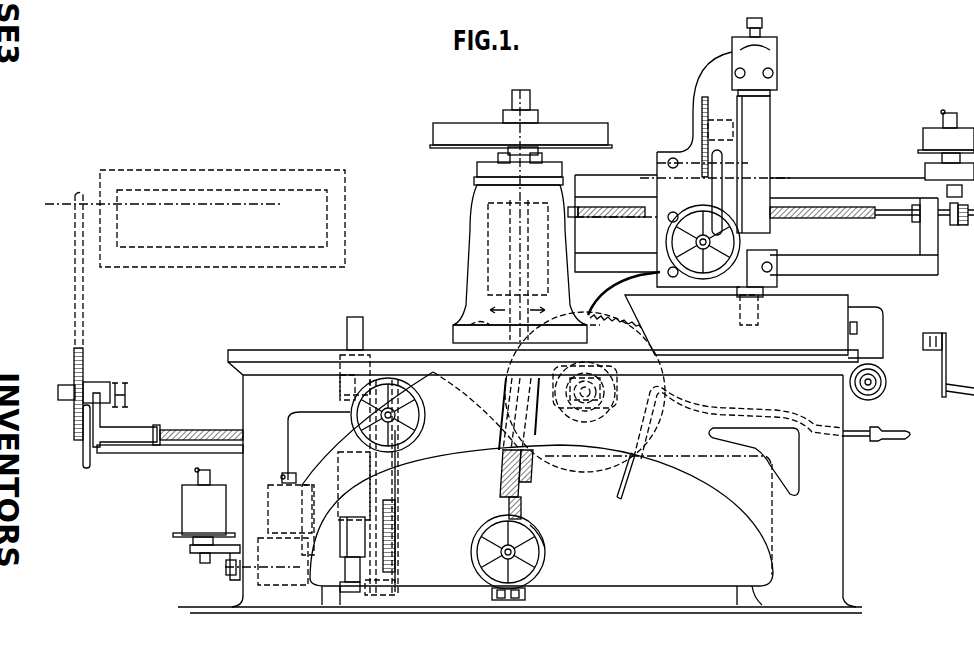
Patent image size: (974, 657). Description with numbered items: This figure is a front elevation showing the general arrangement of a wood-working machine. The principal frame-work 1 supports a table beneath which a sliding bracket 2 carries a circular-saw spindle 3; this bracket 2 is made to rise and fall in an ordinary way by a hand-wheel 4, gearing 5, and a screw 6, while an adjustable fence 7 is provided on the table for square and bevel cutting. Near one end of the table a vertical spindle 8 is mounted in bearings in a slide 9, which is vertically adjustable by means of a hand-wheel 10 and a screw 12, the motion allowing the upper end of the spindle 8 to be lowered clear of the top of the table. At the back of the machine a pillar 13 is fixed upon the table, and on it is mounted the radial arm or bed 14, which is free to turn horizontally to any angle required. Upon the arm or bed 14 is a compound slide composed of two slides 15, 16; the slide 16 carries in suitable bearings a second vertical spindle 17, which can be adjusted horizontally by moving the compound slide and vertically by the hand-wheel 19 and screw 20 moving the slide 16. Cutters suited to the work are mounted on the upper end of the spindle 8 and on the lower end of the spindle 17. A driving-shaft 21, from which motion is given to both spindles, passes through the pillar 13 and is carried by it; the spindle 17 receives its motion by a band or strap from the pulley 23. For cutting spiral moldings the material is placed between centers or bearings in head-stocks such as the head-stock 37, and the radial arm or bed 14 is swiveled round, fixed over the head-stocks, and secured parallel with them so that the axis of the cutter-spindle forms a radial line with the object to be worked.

The principal frame-work 1 is at (544, 481).
The sliding bracket 2 is at (532, 452).
The circular-saw spindle 3 is at (585, 392).
The hand-wheel 4 is at (512, 557).
The gearing 5 is at (545, 546).
The screw 6 is at (520, 505).
The adjustable fence 7 is at (735, 315).
The vertical spindle 8 is at (355, 358).
The slide 9 is at (352, 554).
The hand-wheel 10 is at (397, 415).
The screw 12 is at (395, 537).
The pillar 13 is at (535, 329).
The radial arm or bed 14 is at (713, 217).
The slide 15 is at (614, 223).
The slide 16 is at (715, 152).
The vertical spindle 17 is at (761, 292).
The hand-wheel 19 is at (703, 245).
The screw 20 is at (712, 146).
The driving-shaft 21 is at (520, 99).
The pulley 23 is at (521, 143).
The head-stock 37 is at (195, 319).